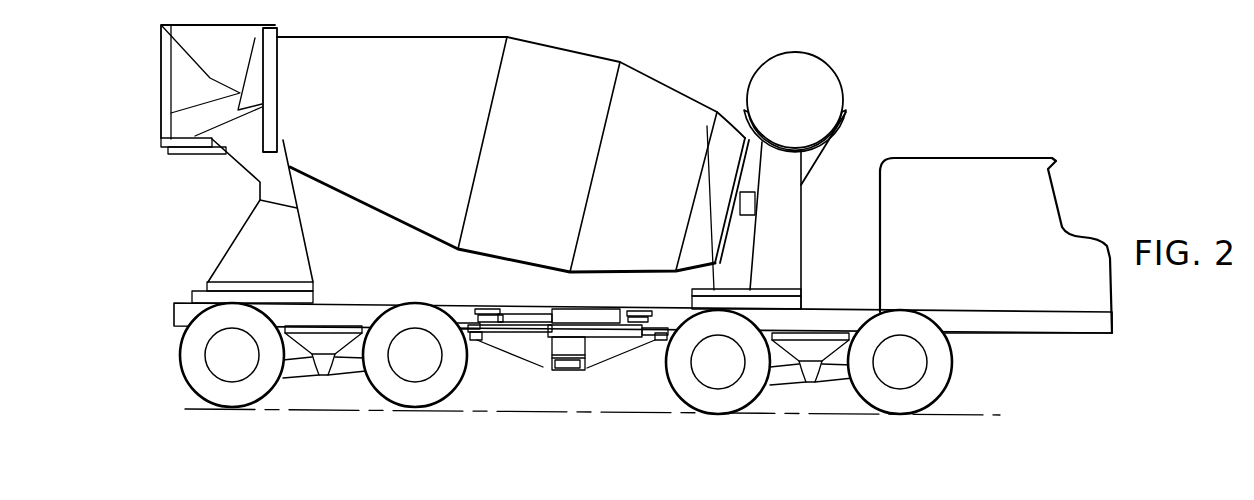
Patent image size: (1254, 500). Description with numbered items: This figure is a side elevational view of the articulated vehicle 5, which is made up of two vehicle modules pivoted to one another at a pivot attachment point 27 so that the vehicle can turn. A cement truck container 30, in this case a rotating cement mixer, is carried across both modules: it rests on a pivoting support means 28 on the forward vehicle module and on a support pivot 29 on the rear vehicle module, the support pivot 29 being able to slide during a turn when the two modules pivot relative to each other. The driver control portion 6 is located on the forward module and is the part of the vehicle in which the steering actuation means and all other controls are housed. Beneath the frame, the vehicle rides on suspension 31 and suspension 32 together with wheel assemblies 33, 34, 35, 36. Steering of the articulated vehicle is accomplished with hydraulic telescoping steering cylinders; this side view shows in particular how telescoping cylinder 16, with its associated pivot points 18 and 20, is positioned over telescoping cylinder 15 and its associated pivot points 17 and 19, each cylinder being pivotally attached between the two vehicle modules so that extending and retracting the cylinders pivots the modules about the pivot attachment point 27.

The articulated vehicle 5 is at (969, 141).
The driver control portion 6 is at (1043, 294).
The hydraulic telescoping steering cylinder 15 is at (575, 332).
The hydraulic telescoping steering cylinder 16 is at (533, 318).
The pivot 17 is at (477, 342).
The pivot 18 is at (495, 318).
The pivot 19 is at (656, 342).
The pivot 20 is at (627, 318).
The pivot attachment point 27 is at (562, 368).
The pivoting support means 28 is at (757, 303).
The support pivot 29 is at (260, 298).
The cement truck container 30 is at (625, 92).
The suspension 31 is at (327, 340).
The suspension 32 is at (815, 345).
The wheel assembly 33 is at (905, 367).
The wheel assembly 34 is at (718, 367).
The wheel assembly 35 is at (417, 360).
The wheel assembly 36 is at (237, 360).